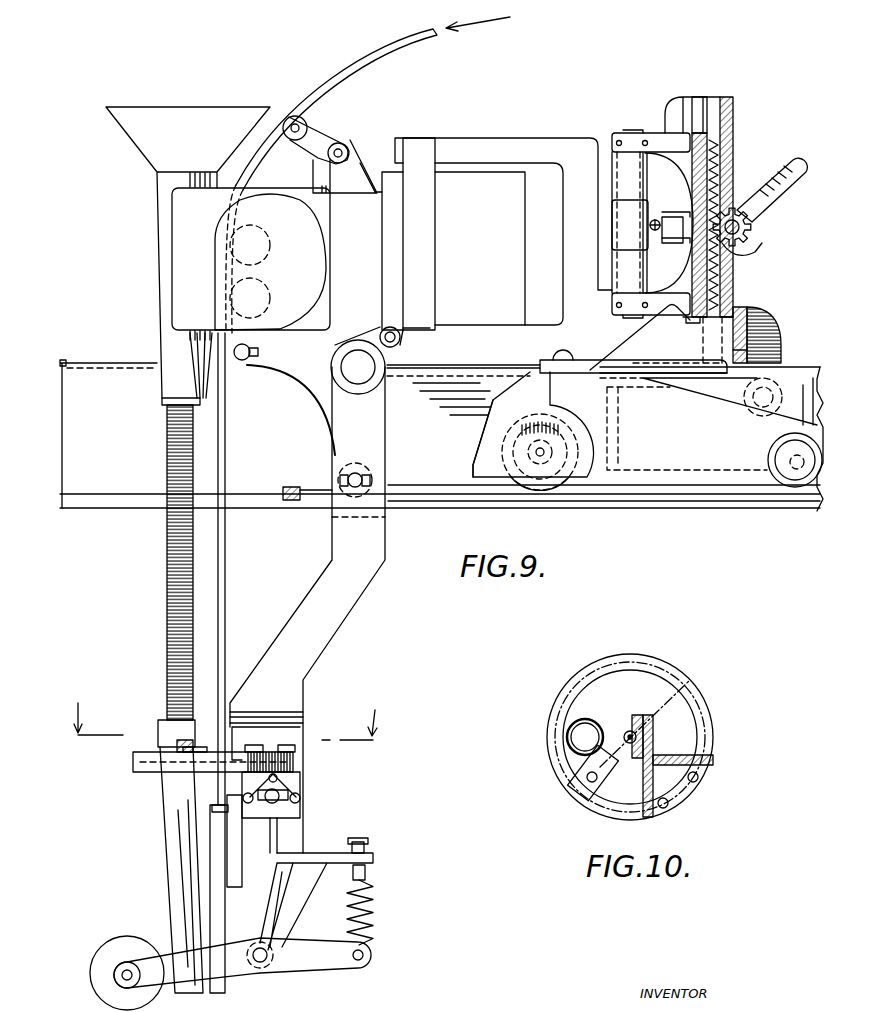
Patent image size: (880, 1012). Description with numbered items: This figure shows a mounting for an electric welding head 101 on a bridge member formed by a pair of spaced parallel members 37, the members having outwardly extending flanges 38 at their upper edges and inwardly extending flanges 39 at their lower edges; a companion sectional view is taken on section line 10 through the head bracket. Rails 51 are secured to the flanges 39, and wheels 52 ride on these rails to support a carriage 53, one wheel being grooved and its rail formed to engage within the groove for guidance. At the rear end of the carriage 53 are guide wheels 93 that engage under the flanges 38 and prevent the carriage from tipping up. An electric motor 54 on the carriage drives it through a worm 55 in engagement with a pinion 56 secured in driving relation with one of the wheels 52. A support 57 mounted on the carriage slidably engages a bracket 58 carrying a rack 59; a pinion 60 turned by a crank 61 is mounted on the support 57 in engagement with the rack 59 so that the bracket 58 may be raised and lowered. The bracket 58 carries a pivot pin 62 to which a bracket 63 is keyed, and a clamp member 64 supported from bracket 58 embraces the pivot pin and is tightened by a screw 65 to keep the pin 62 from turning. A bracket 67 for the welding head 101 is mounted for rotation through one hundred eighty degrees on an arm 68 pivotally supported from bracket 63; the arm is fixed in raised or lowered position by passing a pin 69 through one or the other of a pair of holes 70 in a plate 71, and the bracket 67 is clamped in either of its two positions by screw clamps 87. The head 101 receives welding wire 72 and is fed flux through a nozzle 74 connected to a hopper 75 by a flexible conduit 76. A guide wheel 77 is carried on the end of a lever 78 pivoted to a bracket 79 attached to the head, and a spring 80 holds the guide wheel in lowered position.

In FIG. 9, the section line 10— 10 is at (228, 709).
In FIG. 9, the spaced parallel members 37 is at (467, 367).
In FIG. 9, the outwardly extending flanges 38 is at (133, 372).
In FIG. 9, the inwardly extending flanges 39 is at (133, 494).
In FIG. 9, the rails 51 is at (284, 488).
In FIG. 9, the wheels 52 is at (530, 487).
In FIG. 9, the carriage 53 is at (597, 362).
In FIG. 9, the electric motor 54 is at (687, 470).
In FIG. 9, the worm 55 is at (549, 428).
In FIG. 9, the pinion 56 is at (520, 442).
In FIG. 9, the support 57 is at (728, 97).
In FIG. 9, the bracket 58 is at (697, 110).
In FIG. 9, the rack 59 is at (733, 172).
In FIG. 9, the pinion 60 is at (749, 238).
In FIG. 9, the crank 61 is at (779, 197).
In FIG. 9, the pivot pin 62 is at (632, 133).
In FIG. 9, the bracket 63 is at (511, 140).
In FIG. 9, the clamp member 64 is at (614, 227).
In FIG. 9, the screw 65 is at (673, 244).
In FIG. 9, the bracket 67 is at (303, 786).
In FIG. 10, the bracket 67 is at (697, 689).
In FIG. 9, the arm 68 is at (323, 631).
In FIG. 10, the arm 68 is at (712, 756).
In FIG. 9, the pin 69 is at (364, 478).
In FIG. 9, the holes 70 is at (247, 362).
In FIG. 9, the plate 71 is at (318, 400).
In FIG. 9, the welding wire 72 is at (352, 60).
In FIG. 10, the welding wire 72 is at (624, 735).
In FIG. 9, the nozzle 74 is at (160, 833).
In FIG. 10, the nozzle 74 is at (571, 722).
In FIG. 9, the hopper 75 is at (157, 183).
In FIG. 9, the flexible conduit 76 is at (167, 555).
In FIG. 9, the guide wheel 77 is at (116, 948).
In FIG. 9, the lever 78 is at (306, 968).
In FIG. 9, the bracket 79 is at (287, 905).
In FIG. 9, the spring 80 is at (376, 917).
In FIG. 10, the screw clamps 87 is at (578, 778).
In FIG. 9, the guide wheels 93 is at (789, 392).
In FIG. 9, the electric welding head 101 is at (213, 256).